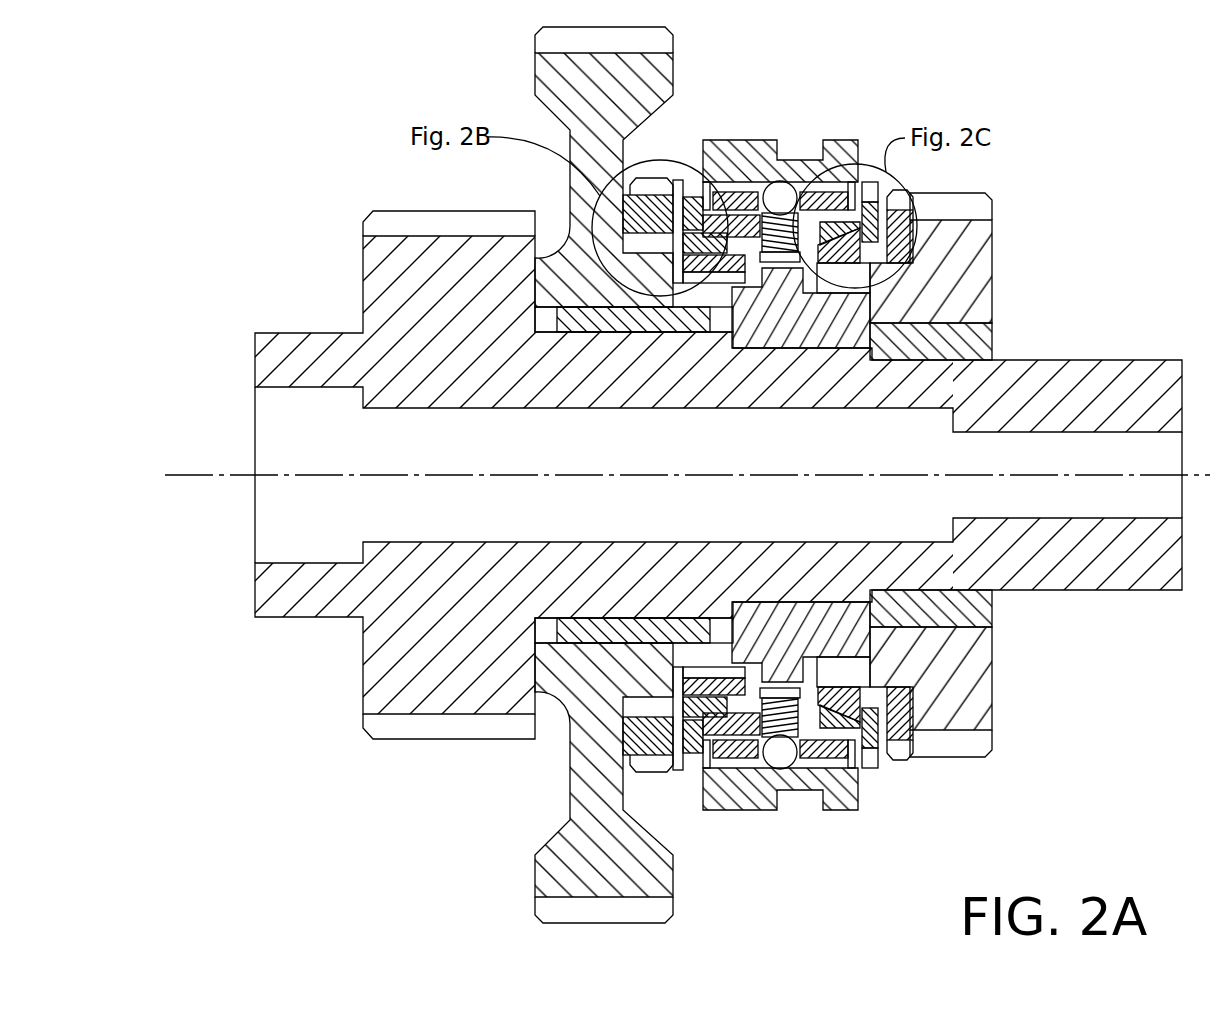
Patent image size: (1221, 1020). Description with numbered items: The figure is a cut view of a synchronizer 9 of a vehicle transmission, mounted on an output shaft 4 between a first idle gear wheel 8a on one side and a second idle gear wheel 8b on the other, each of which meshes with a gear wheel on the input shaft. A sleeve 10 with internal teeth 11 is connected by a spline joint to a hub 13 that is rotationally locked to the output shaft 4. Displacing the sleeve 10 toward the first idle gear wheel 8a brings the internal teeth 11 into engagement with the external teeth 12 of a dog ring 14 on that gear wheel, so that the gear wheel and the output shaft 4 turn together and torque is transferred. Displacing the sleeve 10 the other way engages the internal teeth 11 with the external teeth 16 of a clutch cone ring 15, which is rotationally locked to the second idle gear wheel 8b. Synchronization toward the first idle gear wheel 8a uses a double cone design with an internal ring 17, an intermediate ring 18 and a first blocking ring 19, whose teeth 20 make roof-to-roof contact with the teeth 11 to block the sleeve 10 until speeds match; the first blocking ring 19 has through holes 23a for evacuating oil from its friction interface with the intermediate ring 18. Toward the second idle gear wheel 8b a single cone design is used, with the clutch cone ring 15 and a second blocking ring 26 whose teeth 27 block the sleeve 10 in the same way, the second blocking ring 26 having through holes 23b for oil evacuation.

The output shaft 4 is at (305, 356).
The first idle gear wheel 8a is at (580, 80).
The second idle gear wheel 8b is at (942, 265).
The synchronizer 9 is at (916, 74).
The sleeve 10 is at (845, 140).
The internal teeth 11 is at (728, 758).
The external teeth 12 is at (655, 183).
The hub 13 is at (795, 318).
The dog ring 14 is at (678, 770).
The clutch cone ring 15 is at (898, 740).
The external teeth 16 is at (897, 196).
The internal ring 17 is at (690, 243).
The intermediate ring 18 is at (638, 198).
The first blocking ring 19 is at (735, 192).
The teeth 20 is at (695, 752).
The through holes 23a is at (710, 215).
The through holes 23b is at (850, 192).
The second blocking ring 26 is at (870, 182).
The teeth 27 is at (870, 750).